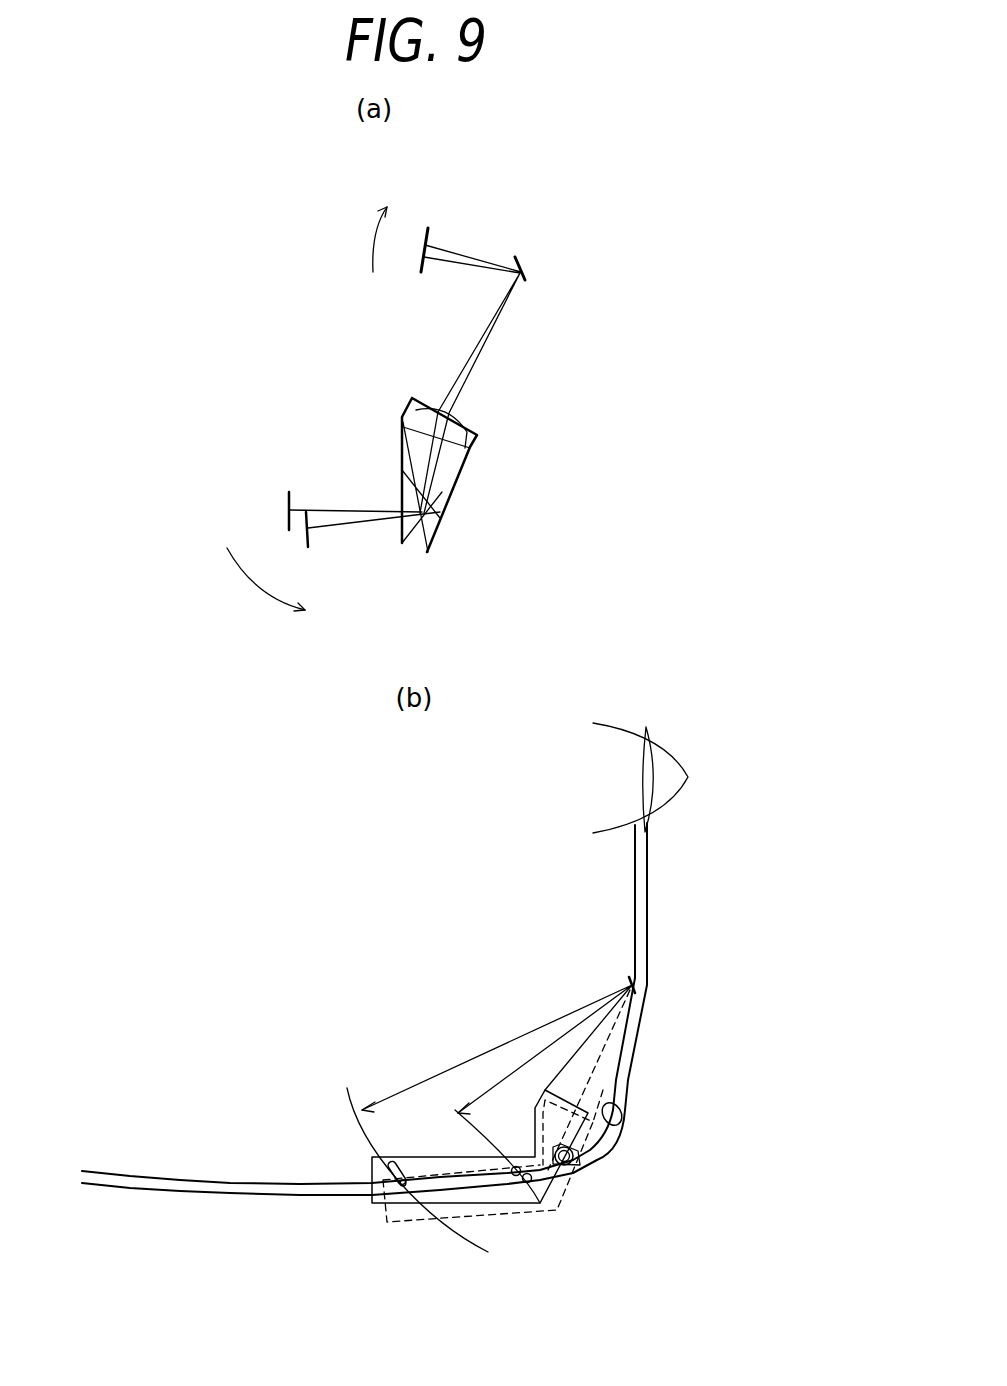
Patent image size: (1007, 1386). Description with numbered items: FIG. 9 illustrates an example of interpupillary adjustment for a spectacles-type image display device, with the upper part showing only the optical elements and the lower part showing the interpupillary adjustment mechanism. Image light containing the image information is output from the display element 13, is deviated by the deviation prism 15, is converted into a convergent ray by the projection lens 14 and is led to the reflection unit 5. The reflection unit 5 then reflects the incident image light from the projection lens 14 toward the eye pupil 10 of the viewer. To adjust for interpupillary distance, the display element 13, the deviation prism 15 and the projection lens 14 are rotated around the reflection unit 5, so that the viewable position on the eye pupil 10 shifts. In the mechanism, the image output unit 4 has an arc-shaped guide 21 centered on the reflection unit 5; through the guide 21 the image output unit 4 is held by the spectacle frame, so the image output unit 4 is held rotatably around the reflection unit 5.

The image output unit 4 is at (505, 1203).
The reflection unit 5 is at (525, 275).
The eye pupil 10 is at (430, 232).
The display element 13 is at (289, 497).
The projection lens 14 is at (480, 436).
The deviation prism 15 is at (455, 492).
The arc-shaped guide 21 is at (372, 1203).